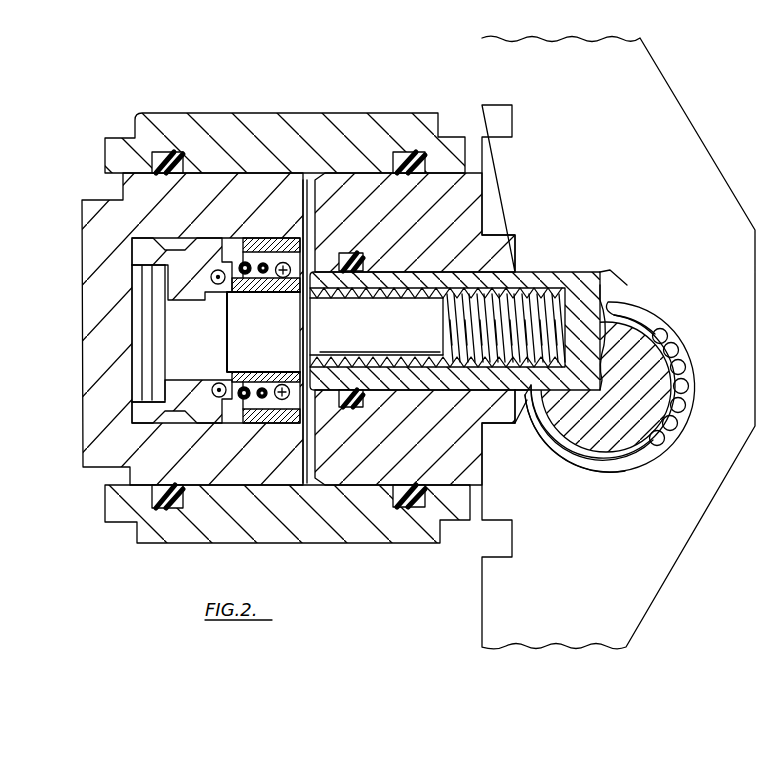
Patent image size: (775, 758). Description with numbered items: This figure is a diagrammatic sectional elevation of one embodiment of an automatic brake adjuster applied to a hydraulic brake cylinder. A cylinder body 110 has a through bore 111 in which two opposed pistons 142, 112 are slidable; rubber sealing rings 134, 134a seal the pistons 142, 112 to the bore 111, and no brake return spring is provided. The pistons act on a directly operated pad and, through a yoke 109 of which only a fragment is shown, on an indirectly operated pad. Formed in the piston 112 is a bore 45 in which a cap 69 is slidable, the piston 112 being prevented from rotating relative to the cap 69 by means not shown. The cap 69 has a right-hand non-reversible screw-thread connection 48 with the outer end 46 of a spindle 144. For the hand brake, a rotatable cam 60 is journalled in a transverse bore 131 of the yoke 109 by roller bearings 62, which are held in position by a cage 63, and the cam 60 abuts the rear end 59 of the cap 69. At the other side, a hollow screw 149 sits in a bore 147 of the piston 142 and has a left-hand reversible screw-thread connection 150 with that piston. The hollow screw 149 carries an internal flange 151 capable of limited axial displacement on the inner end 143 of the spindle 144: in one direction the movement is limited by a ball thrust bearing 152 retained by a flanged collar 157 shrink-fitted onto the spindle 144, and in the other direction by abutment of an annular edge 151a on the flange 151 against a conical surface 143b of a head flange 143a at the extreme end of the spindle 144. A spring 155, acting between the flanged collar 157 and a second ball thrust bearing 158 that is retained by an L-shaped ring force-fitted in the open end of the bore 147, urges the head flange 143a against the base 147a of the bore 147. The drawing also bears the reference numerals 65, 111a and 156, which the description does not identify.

The bore 45 is at (366, 296).
The outer end of spindle 46 is at (527, 393).
The right hand non-reversible screw-thread connection 48 is at (473, 398).
The rear end of cap 59 is at (612, 275).
The rotatable cam 60 is at (678, 360).
The roller bearings 62 is at (684, 432).
The cage 63 is at (652, 313).
The seal ring 65 is at (352, 253).
The cap 69 is at (418, 278).
The yoke 109 is at (708, 493).
The cylinder body 110 is at (312, 527).
The through bore 111 is at (108, 478).
The sleeve 111a is at (304, 200).
The piston 112 is at (338, 470).
The transverse bore 131 is at (607, 463).
The rubber sealing ring 134 is at (172, 508).
The rubber sealing ring 134a is at (408, 508).
The piston 142 is at (92, 447).
The inner end of spindle 143 is at (203, 360).
The head flange 143a is at (168, 338).
The conical surface 143b is at (172, 365).
The spindle 144 is at (345, 336).
The bore 147 is at (262, 240).
The base of bore 147a is at (158, 300).
The hollow screw 149 is at (213, 250).
The left-hand reversible screw-thread connection 150 is at (162, 245).
The internal flange 151 is at (160, 322).
The annular edge 151a is at (148, 282).
The ball thrust bearing 152 is at (216, 310).
The spring 155 is at (222, 398).
The ball 156 is at (284, 400).
The flanged collar 157 is at (226, 268).
The ball thrust bearing 158 is at (265, 400).